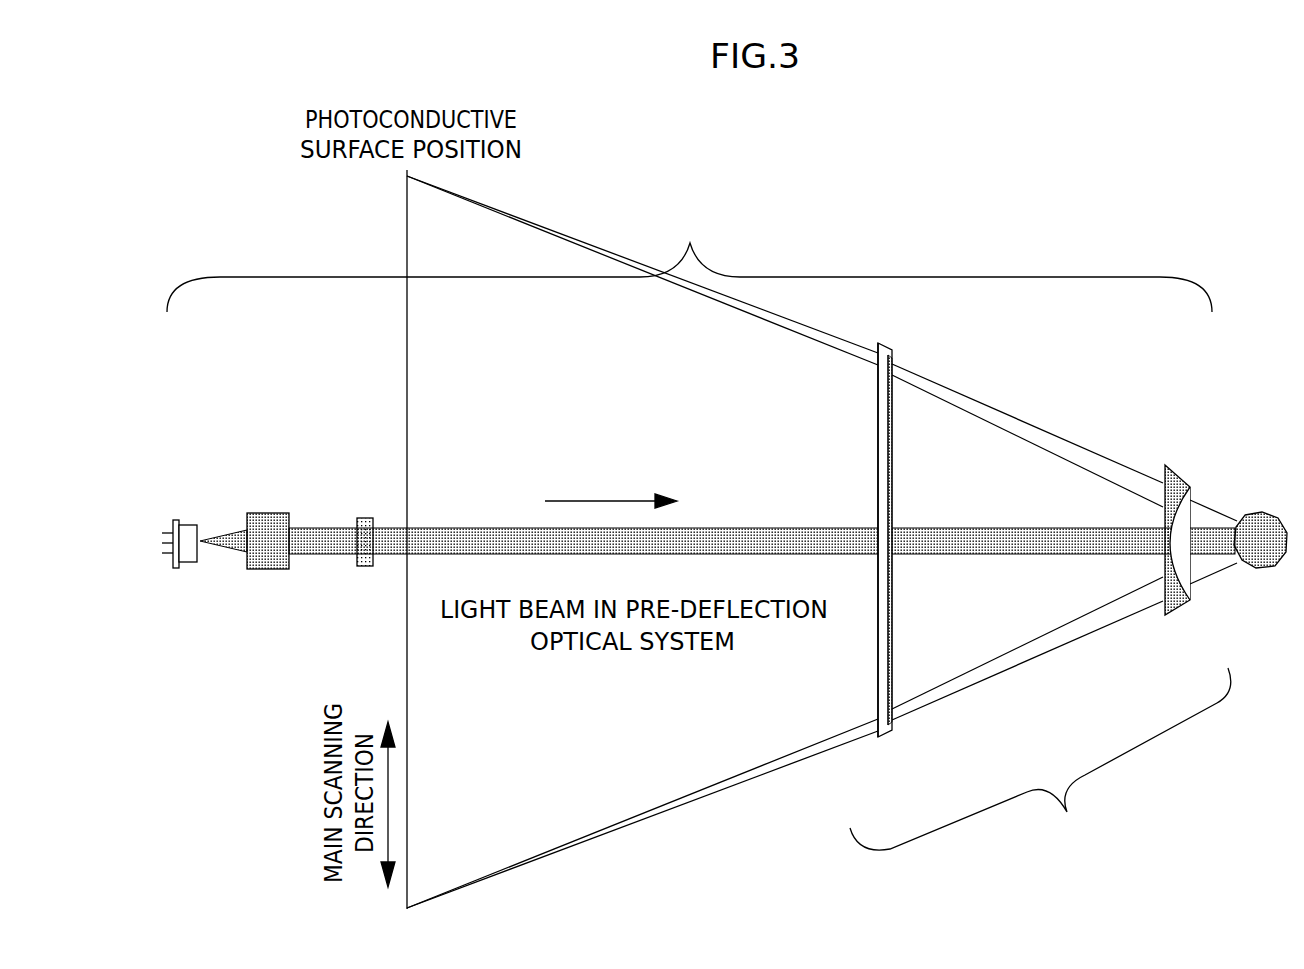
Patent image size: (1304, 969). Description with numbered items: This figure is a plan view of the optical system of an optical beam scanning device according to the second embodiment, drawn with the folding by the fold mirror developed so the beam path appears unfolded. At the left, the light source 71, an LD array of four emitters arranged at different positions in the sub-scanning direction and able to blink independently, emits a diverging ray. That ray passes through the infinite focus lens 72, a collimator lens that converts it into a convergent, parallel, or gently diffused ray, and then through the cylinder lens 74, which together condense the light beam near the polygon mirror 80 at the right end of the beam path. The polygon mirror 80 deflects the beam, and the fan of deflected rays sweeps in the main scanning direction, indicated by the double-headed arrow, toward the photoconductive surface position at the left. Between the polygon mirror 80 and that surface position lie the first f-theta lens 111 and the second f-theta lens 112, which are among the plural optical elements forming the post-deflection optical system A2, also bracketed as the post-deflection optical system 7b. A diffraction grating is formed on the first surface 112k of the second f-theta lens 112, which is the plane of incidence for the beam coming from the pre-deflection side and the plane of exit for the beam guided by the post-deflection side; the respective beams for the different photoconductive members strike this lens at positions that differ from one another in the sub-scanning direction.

The light source 71 is at (185, 572).
The infinite focus lens 72 is at (272, 572).
The cylinder lens 74 is at (366, 568).
The post-deflection optical system 7b is at (689, 262).
The polygon mirror 80 is at (1258, 510).
The fθ 1 lens 111 is at (1180, 617).
The fθ 2 lens 112 is at (888, 740).
The first surface 112k is at (878, 683).
The post-deflection optical system A2 is at (1040, 760).